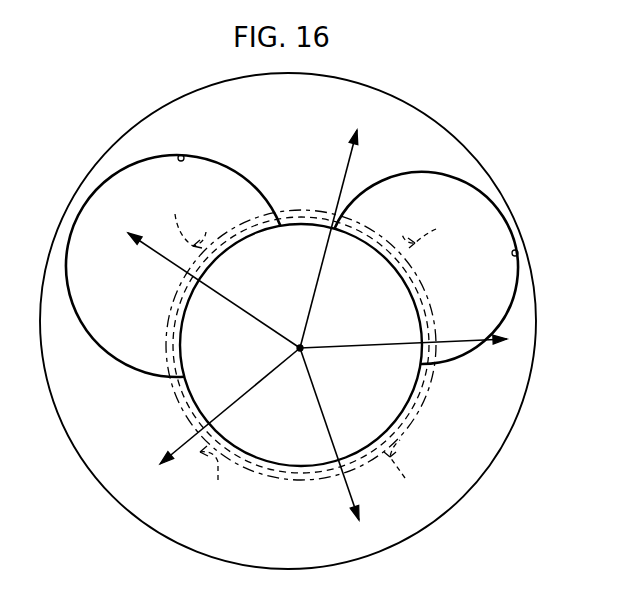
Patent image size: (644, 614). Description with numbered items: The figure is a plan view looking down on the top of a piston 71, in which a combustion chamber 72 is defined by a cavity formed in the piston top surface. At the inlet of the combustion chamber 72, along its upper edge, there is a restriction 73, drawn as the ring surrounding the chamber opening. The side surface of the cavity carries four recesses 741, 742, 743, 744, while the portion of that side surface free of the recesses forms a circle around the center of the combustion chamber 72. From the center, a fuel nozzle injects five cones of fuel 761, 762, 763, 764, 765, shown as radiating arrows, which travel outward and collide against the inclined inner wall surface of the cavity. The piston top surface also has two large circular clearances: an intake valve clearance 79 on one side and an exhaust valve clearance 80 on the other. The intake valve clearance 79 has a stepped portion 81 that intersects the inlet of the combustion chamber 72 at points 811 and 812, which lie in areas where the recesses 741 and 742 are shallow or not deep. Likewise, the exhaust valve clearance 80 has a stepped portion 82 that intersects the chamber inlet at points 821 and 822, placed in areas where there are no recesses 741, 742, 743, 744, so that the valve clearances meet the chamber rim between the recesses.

The piston 71 is at (512, 440).
The combustion chamber 72 is at (302, 412).
The restriction 73 is at (419, 380).
The intake valve clearance 79 is at (113, 195).
The exhaust valve clearance 80 is at (494, 218).
The stepped portion 81 is at (183, 155).
The stepped portion 82 is at (518, 253).
The fuel cone 761 is at (240, 397).
The fuel cone 762 is at (217, 293).
The fuel cone 763 is at (317, 290).
The fuel cone 764 is at (360, 348).
The fuel cone 765 is at (327, 430).
The intersection point 811 is at (167, 377).
The intersection point 812 is at (275, 225).
The intersection point 821 is at (338, 228).
The intersection point 822 is at (420, 363).
The recess 741 is at (224, 479).
The recess 742 is at (183, 220).
The recess 743 is at (440, 232).
The recess 744 is at (415, 473).